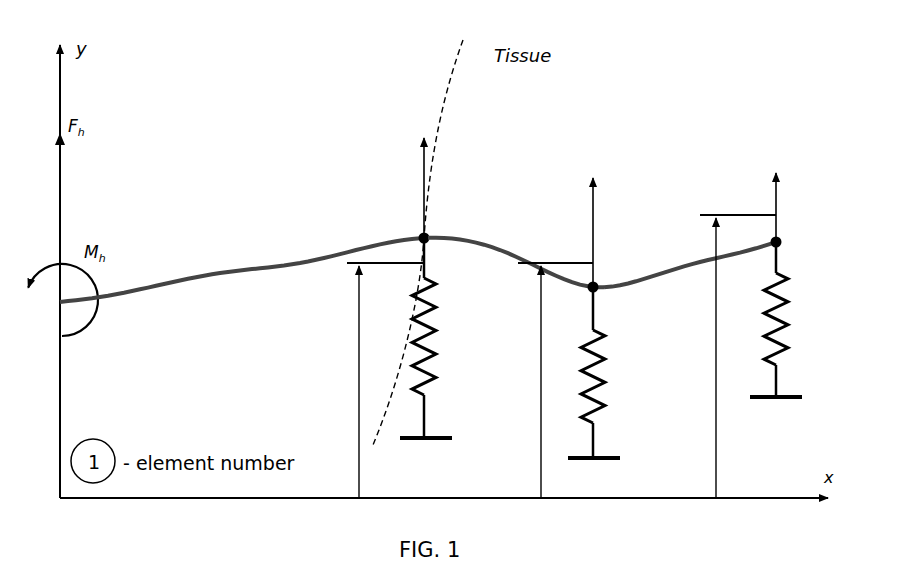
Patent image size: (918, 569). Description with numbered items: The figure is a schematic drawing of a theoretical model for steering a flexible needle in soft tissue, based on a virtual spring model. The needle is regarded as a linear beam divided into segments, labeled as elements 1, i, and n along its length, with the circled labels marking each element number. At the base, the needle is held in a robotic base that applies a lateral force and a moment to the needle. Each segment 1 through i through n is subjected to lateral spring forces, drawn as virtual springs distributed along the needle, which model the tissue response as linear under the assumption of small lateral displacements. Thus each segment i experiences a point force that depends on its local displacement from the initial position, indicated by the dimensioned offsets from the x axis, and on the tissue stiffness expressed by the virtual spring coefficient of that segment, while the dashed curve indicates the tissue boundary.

The first needle element 1 is at (257, 304).
The i-th needle element i is at (530, 327).
The n-th needle element n is at (708, 326).